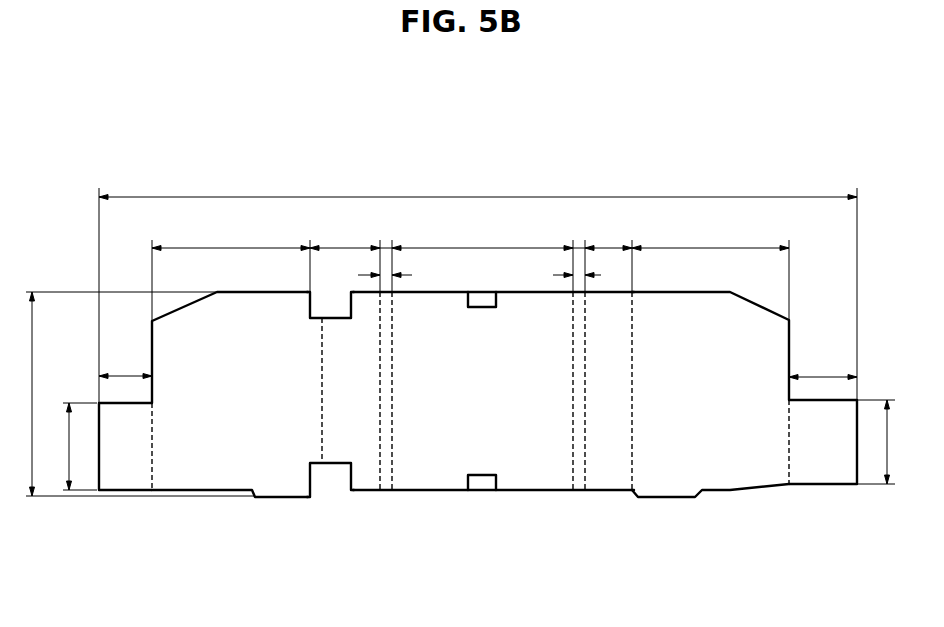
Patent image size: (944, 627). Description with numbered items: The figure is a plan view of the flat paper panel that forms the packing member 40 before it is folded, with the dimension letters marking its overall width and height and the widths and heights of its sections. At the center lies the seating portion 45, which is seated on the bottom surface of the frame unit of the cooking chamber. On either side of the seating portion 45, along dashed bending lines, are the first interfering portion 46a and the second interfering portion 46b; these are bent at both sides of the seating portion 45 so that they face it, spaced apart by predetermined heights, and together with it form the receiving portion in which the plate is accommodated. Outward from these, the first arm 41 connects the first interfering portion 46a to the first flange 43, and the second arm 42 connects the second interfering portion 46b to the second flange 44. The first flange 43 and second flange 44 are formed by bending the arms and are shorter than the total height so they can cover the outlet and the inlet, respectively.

The packing member 40 is at (153, 166).
The first arm 41 is at (200, 473).
The second arm 42 is at (713, 473).
The first flange 43 is at (127, 473).
The second flange 44 is at (820, 473).
The seating portion 45 is at (525, 473).
The first interfering portion 46a is at (363, 473).
The second interfering portion 46b is at (607, 473).